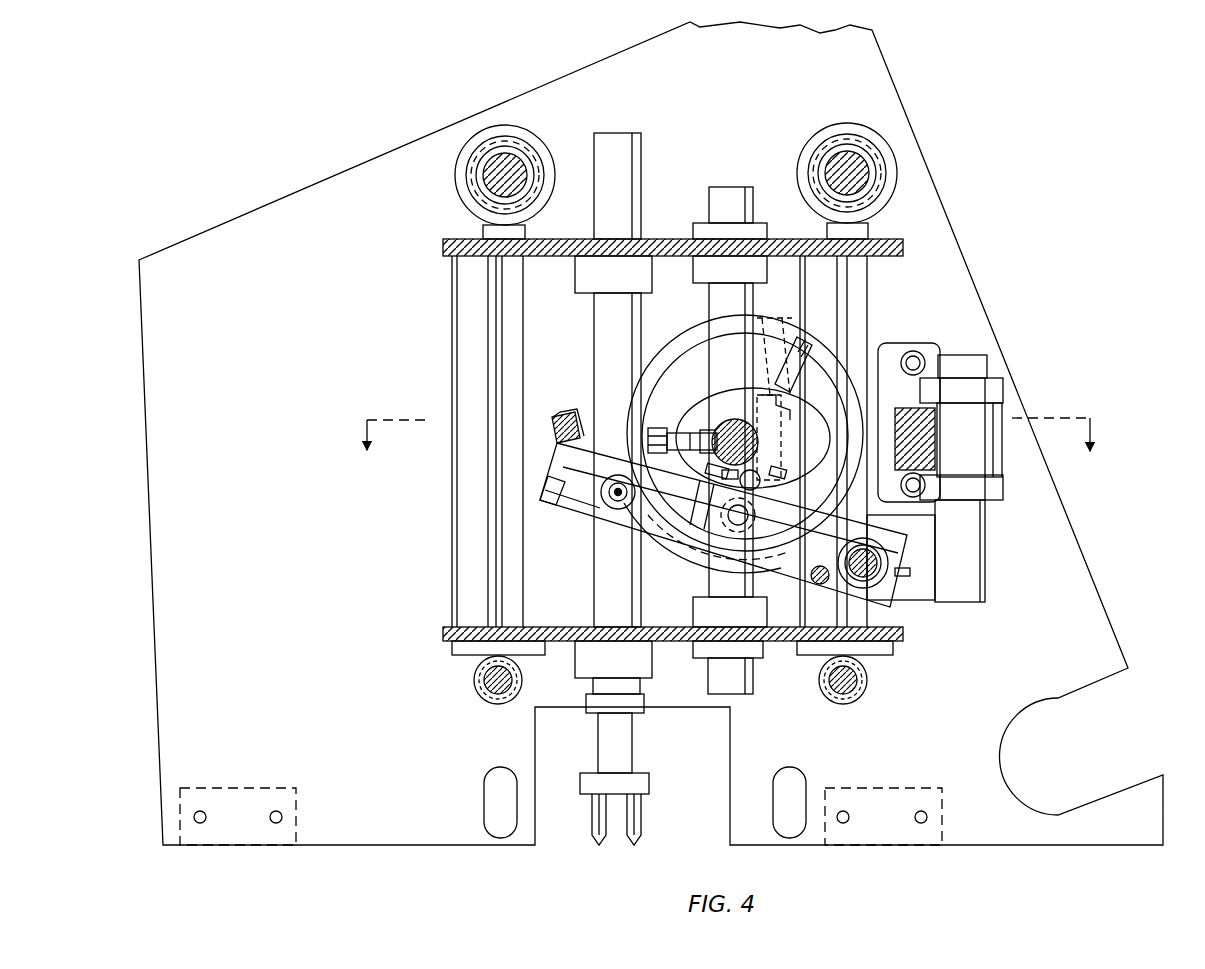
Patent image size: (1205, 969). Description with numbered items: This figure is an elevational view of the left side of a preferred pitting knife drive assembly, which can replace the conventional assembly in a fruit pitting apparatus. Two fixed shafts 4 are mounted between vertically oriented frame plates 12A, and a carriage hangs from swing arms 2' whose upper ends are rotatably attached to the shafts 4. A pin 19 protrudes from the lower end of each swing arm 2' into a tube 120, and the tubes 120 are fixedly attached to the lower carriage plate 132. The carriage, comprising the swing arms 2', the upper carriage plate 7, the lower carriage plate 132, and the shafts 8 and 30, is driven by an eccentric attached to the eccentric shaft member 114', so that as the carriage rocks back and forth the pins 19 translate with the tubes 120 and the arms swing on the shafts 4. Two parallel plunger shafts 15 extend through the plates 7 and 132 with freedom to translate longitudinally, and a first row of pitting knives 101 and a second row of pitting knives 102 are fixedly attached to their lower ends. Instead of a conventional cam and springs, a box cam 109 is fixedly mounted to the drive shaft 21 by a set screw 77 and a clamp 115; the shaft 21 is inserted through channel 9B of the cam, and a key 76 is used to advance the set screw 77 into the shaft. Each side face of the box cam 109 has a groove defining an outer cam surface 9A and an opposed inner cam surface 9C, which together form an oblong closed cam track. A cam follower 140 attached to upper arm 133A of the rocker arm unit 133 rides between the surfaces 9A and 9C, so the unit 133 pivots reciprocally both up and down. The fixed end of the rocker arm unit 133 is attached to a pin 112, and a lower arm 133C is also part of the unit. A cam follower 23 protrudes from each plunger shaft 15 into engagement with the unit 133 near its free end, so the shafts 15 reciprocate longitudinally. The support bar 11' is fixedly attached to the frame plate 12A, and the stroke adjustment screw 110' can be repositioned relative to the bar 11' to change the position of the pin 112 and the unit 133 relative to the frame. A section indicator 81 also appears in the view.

The swing arm 2' is at (636, 163).
The shaft 4 is at (523, 145).
The upper carriage plate 7 is at (905, 240).
The shaft 8 is at (872, 300).
The outer cam surface 9A is at (700, 548).
The channel 9B is at (778, 482).
The inner cam surface 9C is at (722, 500).
The support bar 11' is at (969, 467).
The frame plate 12A is at (878, 98).
The plunger shaft 15 is at (620, 160).
The pin 19 is at (493, 708).
The shaft 21 is at (727, 425).
The cam follower 23 is at (593, 513).
The shaft 30 is at (465, 348).
The key 76 is at (650, 433).
The set screw 77 is at (710, 437).
The section line 81 is at (734, 455).
The pitting knife 101 is at (640, 808).
The pitting knife 102 is at (592, 832).
The box cam 109 is at (667, 362).
The stroke adjustment screw 110' is at (1044, 478).
The pin 112 is at (897, 583).
The eccentric shaft member 114' is at (725, 421).
The clamp 115 is at (777, 447).
The tube 120 is at (482, 695).
The lower carriage plate 132 is at (440, 628).
The rocker arm unit 133 is at (546, 504).
The upper arm 133A is at (552, 450).
The lower arm 133C is at (593, 550).
The cam follower 140 is at (757, 573).